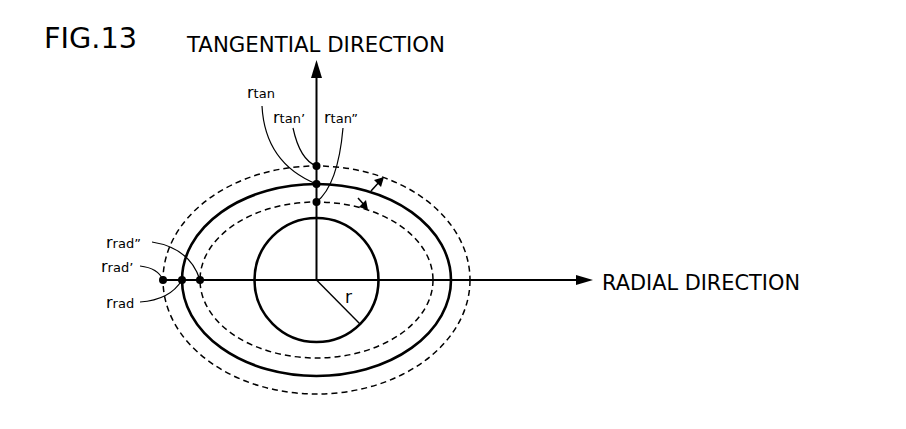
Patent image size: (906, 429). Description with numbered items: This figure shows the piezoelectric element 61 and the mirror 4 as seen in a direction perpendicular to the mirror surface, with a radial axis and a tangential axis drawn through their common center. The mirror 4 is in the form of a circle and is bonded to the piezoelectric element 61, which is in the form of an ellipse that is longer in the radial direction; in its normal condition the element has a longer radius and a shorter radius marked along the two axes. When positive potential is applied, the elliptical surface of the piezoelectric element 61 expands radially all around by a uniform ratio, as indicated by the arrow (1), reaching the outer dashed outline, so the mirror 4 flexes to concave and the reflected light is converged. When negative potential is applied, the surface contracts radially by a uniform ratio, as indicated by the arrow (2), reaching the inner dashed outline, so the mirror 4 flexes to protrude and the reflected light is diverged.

The mirror 4 is at (355, 267).
The piezoelectric element 61 is at (392, 313).
The arrow 1 is at (390, 185).
The arrow 2 is at (375, 212).